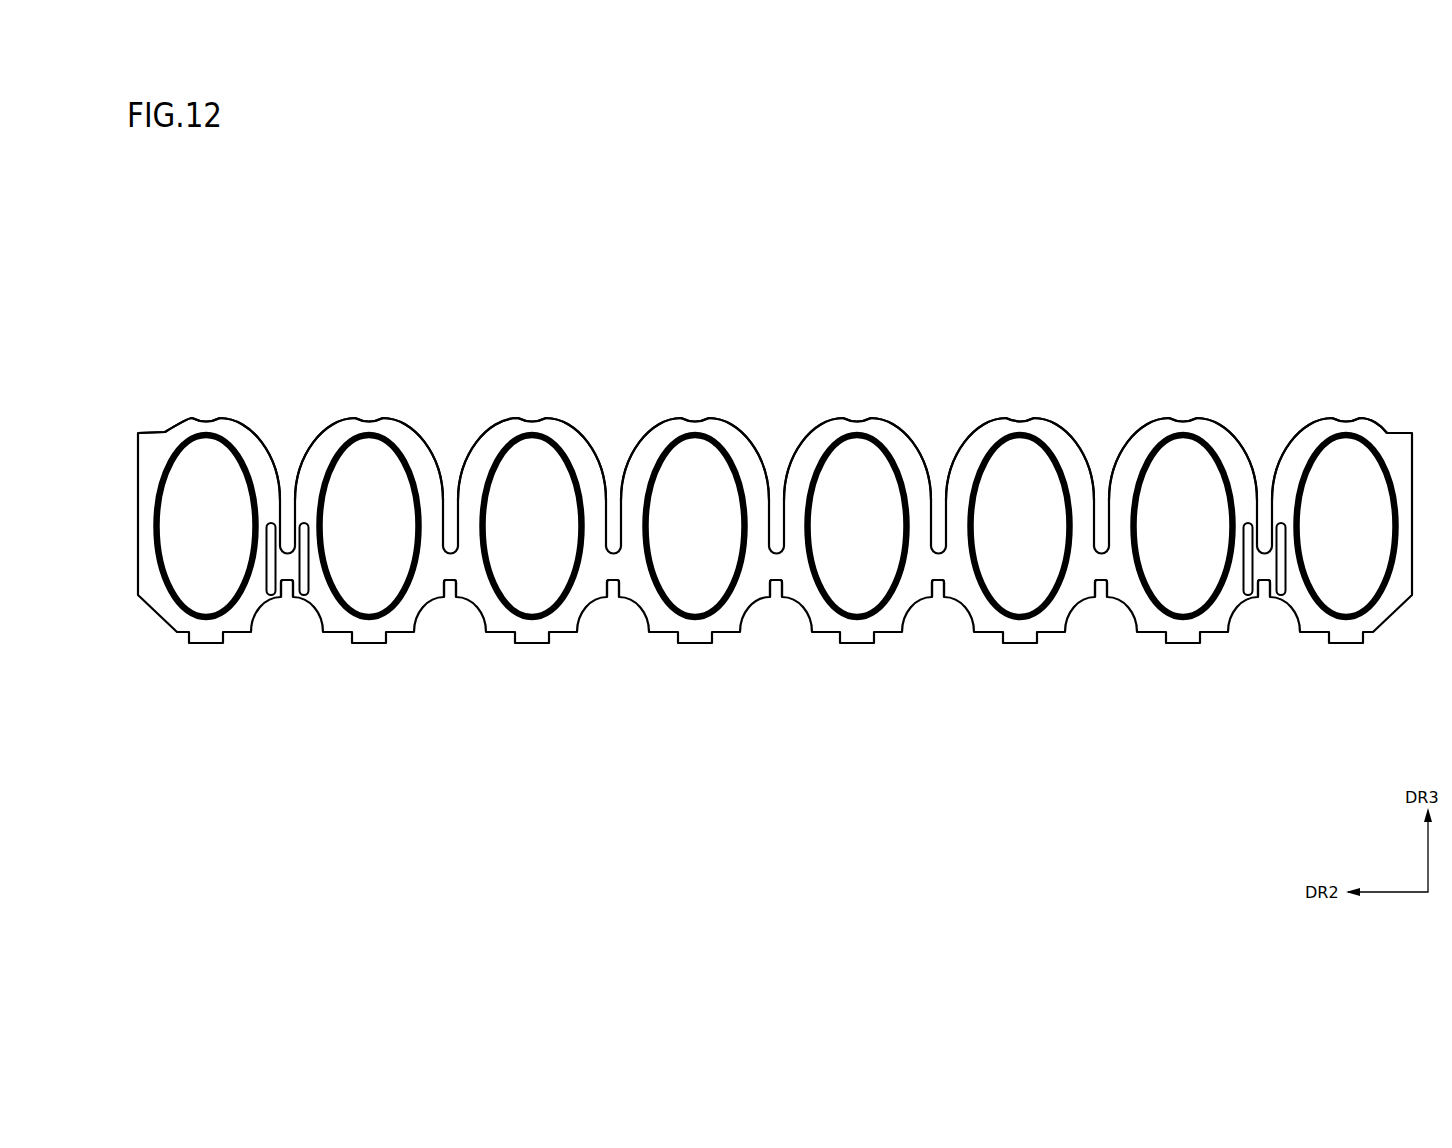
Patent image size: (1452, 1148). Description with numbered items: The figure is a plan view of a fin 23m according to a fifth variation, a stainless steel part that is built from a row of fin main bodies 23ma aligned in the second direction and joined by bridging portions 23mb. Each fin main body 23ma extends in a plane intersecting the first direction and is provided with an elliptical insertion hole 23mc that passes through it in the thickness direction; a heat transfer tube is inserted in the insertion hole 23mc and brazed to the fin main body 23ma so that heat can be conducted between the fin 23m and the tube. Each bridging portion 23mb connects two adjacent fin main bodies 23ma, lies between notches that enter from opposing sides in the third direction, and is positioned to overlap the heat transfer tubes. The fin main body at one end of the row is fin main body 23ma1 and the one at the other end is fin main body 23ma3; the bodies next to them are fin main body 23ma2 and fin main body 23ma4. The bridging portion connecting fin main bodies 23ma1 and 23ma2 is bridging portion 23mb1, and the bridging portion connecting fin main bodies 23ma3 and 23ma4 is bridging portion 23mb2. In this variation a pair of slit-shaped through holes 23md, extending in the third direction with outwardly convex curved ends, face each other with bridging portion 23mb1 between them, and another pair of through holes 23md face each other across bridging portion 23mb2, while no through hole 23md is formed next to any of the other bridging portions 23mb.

The fin 23m is at (1380, 659).
The fin main body 23ma is at (500, 437).
The fin main body 23ma1 is at (180, 437).
The fin main body 23ma2 is at (343, 437).
The fin main body 23ma3 is at (1317, 437).
The fin main body 23ma4 is at (1151, 437).
The bridging portion 23mb is at (452, 568).
The bridging portion 23mb1 is at (289, 568).
The bridging portion 23mb2 is at (1266, 568).
The insertion hole 23mc is at (217, 452).
The through hole 23md is at (268, 595).